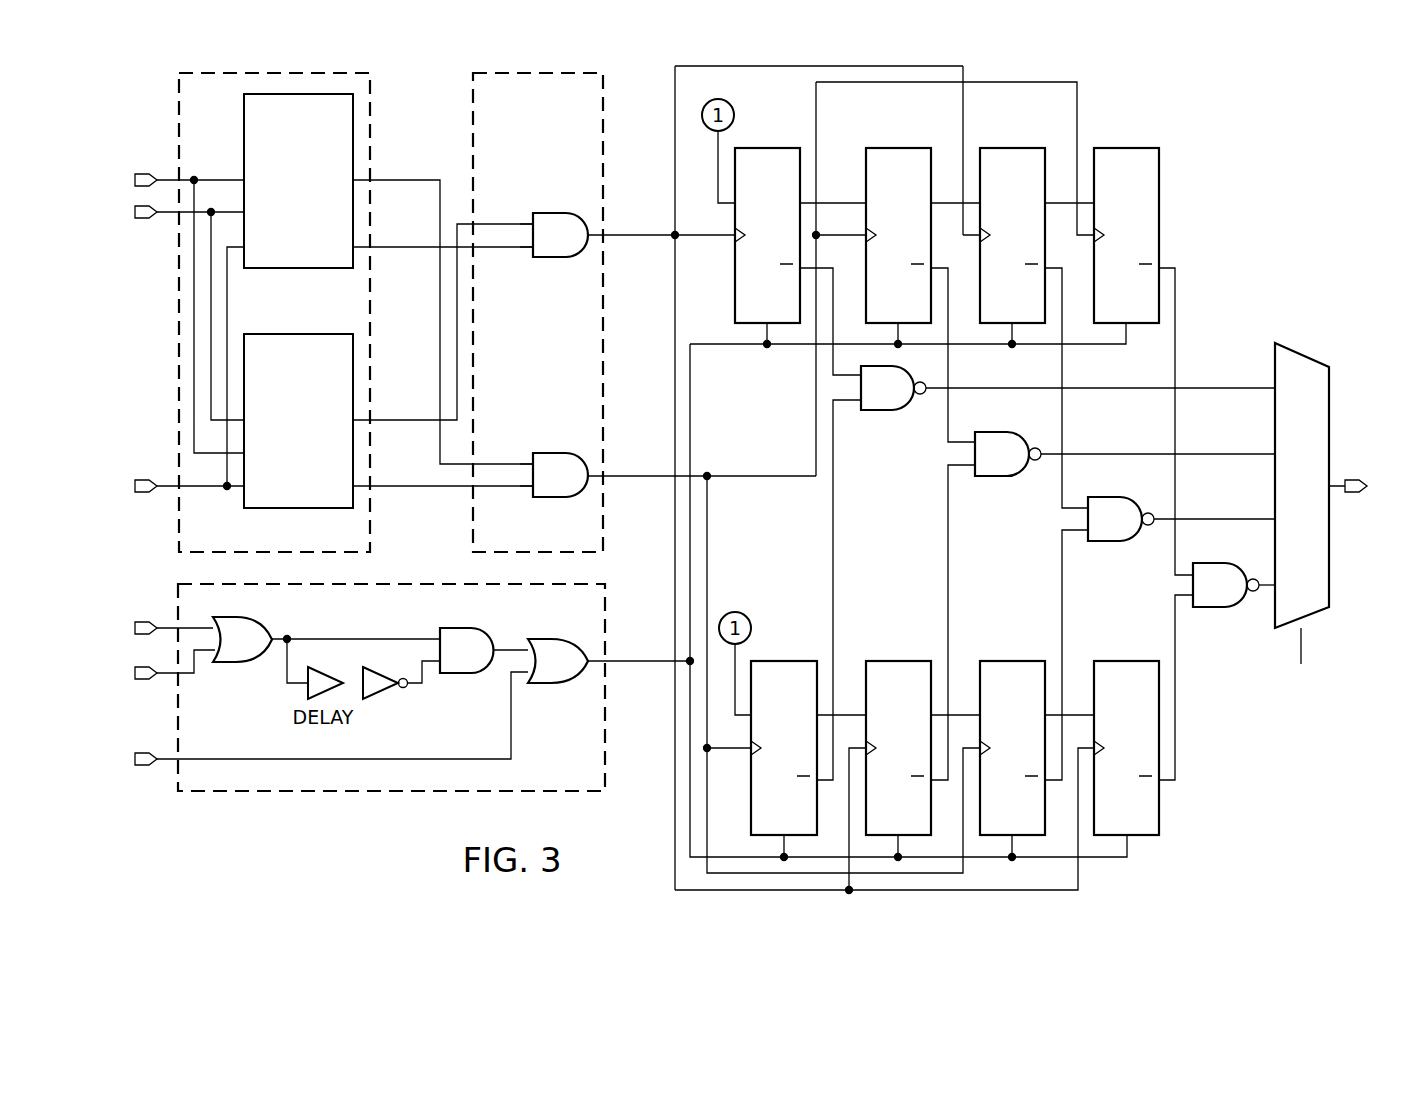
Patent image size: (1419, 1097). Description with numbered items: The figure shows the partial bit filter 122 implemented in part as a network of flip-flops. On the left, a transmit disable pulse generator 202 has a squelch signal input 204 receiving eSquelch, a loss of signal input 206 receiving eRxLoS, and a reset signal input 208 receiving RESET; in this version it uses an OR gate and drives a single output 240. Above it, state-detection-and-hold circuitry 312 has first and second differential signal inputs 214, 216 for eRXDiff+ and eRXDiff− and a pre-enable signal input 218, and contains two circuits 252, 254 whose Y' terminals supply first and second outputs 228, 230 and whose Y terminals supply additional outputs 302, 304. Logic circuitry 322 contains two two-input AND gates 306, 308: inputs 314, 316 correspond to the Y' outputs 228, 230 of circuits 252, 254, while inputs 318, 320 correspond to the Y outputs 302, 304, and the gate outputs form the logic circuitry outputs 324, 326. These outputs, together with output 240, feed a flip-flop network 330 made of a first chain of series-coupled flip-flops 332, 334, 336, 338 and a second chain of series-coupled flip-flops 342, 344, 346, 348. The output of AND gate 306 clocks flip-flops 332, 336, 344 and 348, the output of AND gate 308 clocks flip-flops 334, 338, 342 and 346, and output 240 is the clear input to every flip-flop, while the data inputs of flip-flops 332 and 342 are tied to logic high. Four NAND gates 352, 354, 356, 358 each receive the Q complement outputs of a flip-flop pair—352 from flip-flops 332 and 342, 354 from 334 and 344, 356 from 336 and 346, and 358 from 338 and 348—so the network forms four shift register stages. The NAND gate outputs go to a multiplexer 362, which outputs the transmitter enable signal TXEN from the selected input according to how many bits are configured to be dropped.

The partial bit filter 122 is at (1243, 809).
The transmit disable pulse generator 202 is at (306, 798).
The squelch signal input 204 is at (172, 623).
The loss of signal input 206 is at (172, 679).
The reset signal input 208 is at (172, 766).
The first differential signal input 214 is at (170, 176).
The second differential signal input 216 is at (170, 222).
The pre-enable signal input 218 is at (170, 482).
The first output of state-detection-and-hold circuitry 228 is at (378, 244).
The second output of state-detection-and-hold circuitry 230 is at (378, 492).
The output of transmit disable pulse generator 240 is at (612, 666).
The circuit 252 is at (280, 270).
The circuit 254 is at (308, 333).
The Y terminal output 302 is at (378, 178).
The Y terminal output 304 is at (378, 418).
The AND gate 306 is at (556, 213).
The AND gate 308 is at (556, 453).
The state-detection-and-hold circuitry 312 is at (256, 68).
The input 314 is at (528, 250).
The input 316 is at (528, 490).
The input 318 is at (528, 462).
The input 320 is at (528, 222).
The logic circuitry 322 is at (521, 68).
The output of logic circuitry 324 is at (612, 232).
The output of logic circuitry 326 is at (612, 472).
The flip-flop network 330 is at (1243, 188).
The flip-flop 332 is at (773, 148).
The flip-flop 334 is at (904, 148).
The flip-flop 336 is at (1018, 148).
The flip-flop 338 is at (1136, 148).
The flip-flop 342 is at (790, 661).
The flip-flop 344 is at (904, 661).
The flip-flop 346 is at (1018, 661).
The flip-flop 348 is at (1132, 661).
The NAND gate 352 is at (882, 411).
The NAND gate 354 is at (997, 477).
The NAND gate 356 is at (1110, 542).
The NAND gate 358 is at (1215, 608).
The multiplexer 362 is at (1300, 352).